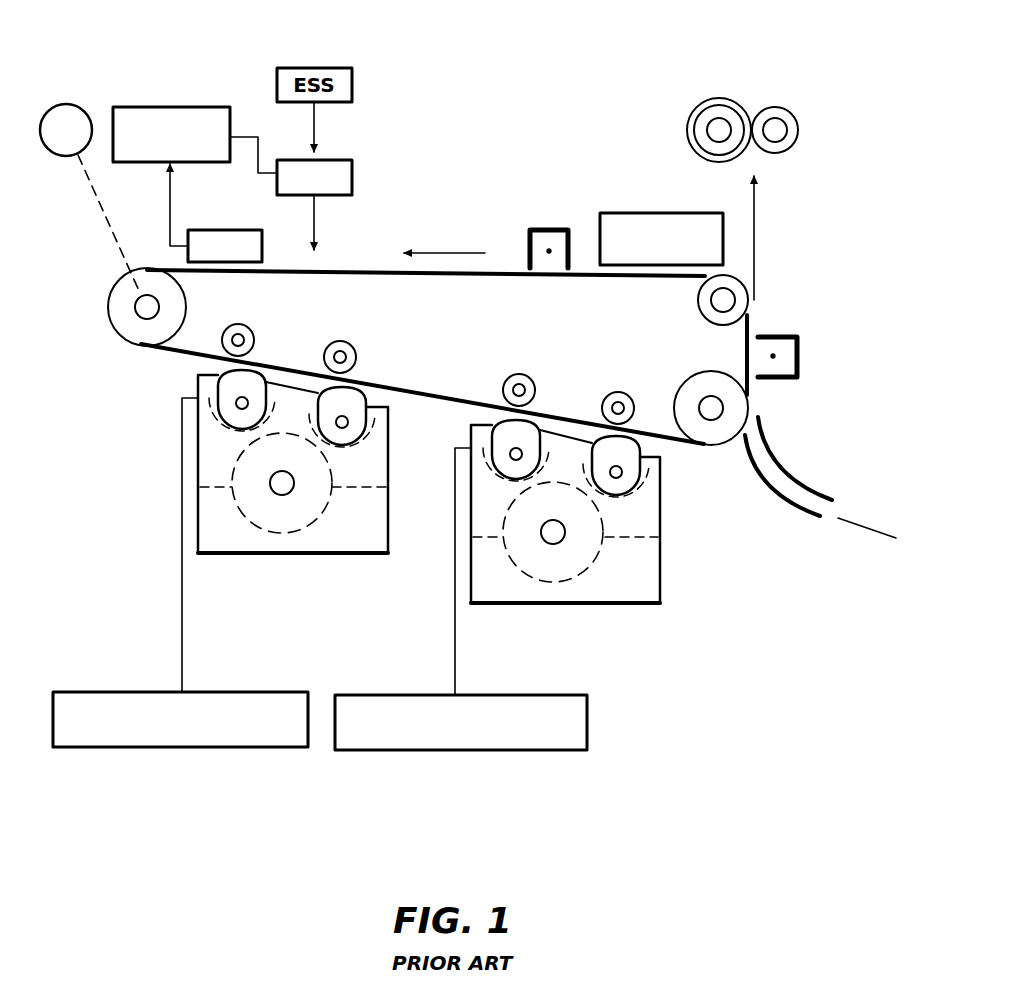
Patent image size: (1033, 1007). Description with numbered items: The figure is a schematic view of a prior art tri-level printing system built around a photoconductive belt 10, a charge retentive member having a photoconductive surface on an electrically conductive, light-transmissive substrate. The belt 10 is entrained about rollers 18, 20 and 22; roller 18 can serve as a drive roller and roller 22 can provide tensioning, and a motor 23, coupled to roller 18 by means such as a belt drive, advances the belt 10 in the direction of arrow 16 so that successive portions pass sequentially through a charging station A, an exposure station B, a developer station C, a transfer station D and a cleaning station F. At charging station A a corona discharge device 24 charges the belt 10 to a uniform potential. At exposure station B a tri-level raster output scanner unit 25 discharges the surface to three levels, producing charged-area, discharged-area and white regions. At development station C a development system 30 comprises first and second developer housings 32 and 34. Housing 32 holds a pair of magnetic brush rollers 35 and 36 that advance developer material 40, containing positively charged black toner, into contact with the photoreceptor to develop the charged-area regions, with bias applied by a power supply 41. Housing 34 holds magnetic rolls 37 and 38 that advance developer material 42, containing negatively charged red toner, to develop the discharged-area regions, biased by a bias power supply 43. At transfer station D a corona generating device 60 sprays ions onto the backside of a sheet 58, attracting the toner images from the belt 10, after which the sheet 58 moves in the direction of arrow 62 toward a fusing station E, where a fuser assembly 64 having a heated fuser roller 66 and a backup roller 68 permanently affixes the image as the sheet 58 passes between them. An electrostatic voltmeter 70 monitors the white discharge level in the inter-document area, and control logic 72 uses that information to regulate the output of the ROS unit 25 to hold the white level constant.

The photoconductive belt 10 is at (750, 320).
The arrow 16 is at (458, 252).
The roller 18 is at (120, 315).
The roller 20 is at (693, 393).
The roller 22 is at (708, 307).
The motor 23 is at (82, 110).
The corona discharge device 24 is at (548, 227).
The tri-level raster output scanner (ROS) unit 25 is at (343, 186).
The development system 30 is at (166, 567).
The first developer housing 32 is at (265, 554).
The second developer housing 34 is at (578, 605).
The magnetic brush roller 35 is at (246, 378).
The magnetic brush roller 36 is at (346, 398).
The magnetic roll 37 is at (502, 433).
The magnetic roll 38 is at (605, 450).
The developer material 40 is at (210, 485).
The power supply 41 is at (263, 741).
The developer material 42 is at (640, 537).
The bias power supply 43 is at (582, 731).
The sheet 58 is at (835, 521).
The corona generating device 60 is at (798, 373).
The arrow 62 is at (759, 193).
The fuser assembly 64 is at (797, 103).
The heated fuser roller 66 is at (728, 102).
The backup roller 68 is at (786, 117).
The electrostatic voltmeter (ESV) 70 is at (213, 229).
The control logic 72 is at (172, 107).
The charging station A is at (522, 192).
The exposure station B is at (386, 168).
The developer station C is at (374, 624).
The transfer station D is at (814, 333).
The fusing station E is at (698, 82).
The cleaning station F is at (656, 196).